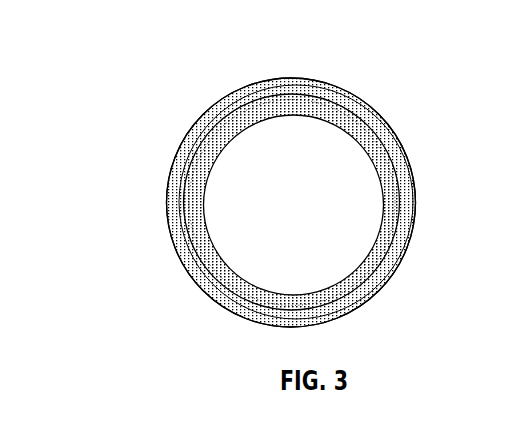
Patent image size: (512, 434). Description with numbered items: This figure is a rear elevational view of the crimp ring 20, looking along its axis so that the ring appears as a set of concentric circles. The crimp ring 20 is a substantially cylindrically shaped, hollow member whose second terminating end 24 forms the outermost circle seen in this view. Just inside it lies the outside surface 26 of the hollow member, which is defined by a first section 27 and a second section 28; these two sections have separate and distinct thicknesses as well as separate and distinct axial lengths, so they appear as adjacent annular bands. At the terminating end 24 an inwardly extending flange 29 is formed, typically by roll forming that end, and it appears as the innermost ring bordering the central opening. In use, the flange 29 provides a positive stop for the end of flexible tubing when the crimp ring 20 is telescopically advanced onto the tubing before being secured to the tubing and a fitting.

The crimp ring 20 is at (395, 96).
The second terminating end 24 is at (389, 275).
The outside surface 26 is at (158, 225).
The first section 27 is at (187, 147).
The second section 28 is at (198, 240).
The inwardly extending flange 29 is at (323, 293).